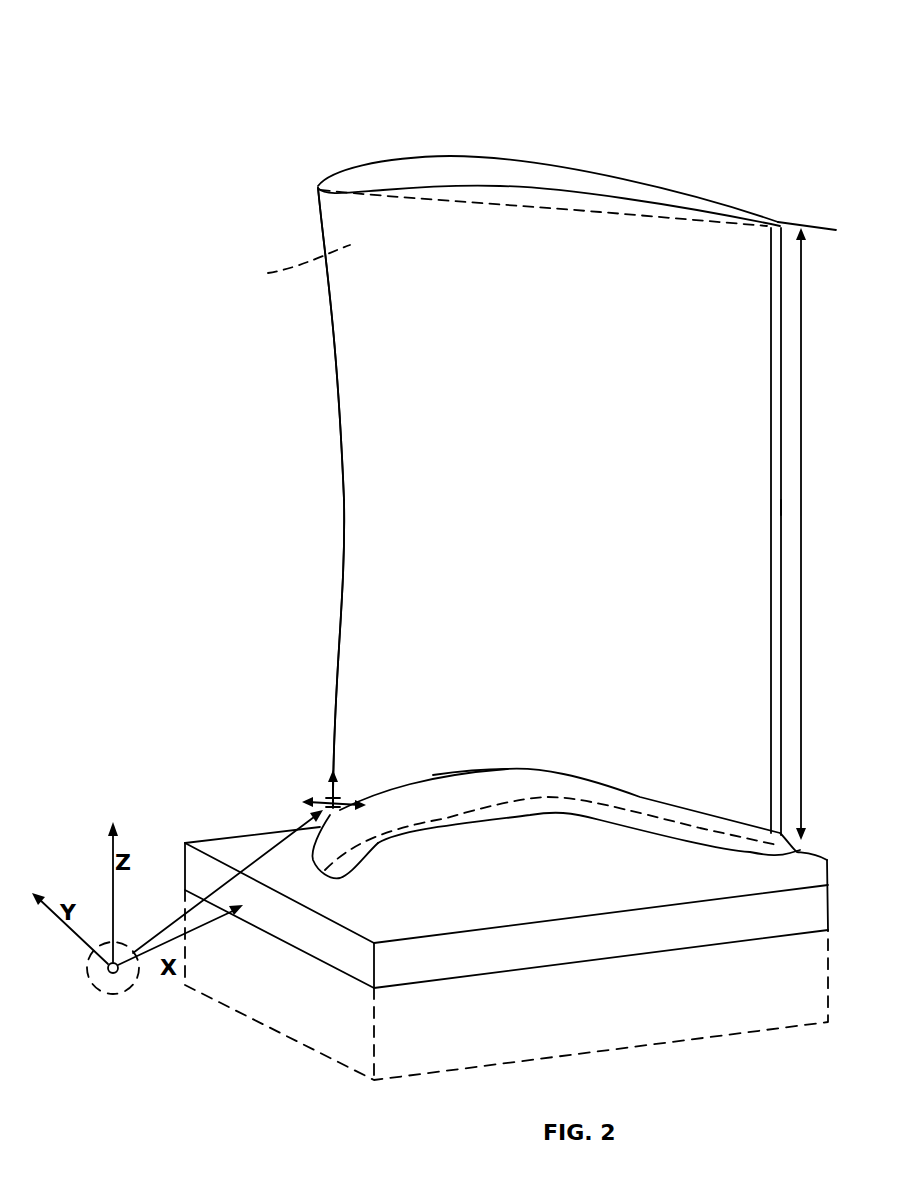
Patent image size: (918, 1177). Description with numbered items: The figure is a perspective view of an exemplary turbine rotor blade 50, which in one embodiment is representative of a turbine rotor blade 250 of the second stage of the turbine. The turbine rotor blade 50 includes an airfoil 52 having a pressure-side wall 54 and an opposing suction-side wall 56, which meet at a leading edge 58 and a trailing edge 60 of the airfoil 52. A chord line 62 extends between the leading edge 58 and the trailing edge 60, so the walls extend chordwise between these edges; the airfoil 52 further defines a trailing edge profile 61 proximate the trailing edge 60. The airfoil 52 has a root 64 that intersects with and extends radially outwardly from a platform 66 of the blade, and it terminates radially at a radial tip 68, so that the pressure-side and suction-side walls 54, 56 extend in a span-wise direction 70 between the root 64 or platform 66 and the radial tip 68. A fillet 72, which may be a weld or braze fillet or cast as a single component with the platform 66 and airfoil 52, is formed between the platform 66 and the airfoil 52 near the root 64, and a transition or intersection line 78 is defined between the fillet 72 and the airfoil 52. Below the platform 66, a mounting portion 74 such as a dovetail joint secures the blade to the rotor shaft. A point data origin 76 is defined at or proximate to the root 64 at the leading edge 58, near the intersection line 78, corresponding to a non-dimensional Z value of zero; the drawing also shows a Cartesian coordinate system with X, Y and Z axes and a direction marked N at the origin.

The turbine rotor blade 50 is at (720, 92).
The turbine rotor blade of the second stage 250 is at (763, 142).
The airfoil 52 is at (561, 514).
The pressure-side wall 54 is at (377, 480).
The suction-side wall 56 is at (296, 265).
The leading edge 58 is at (337, 375).
The trailing edge 60 is at (781, 307).
The trailing edge profile 61 is at (781, 507).
The chord line 62 is at (523, 207).
The root 64 is at (577, 800).
The platform 66 is at (543, 879).
The radial tip 68 is at (590, 160).
The span-wise direction 70 is at (801, 580).
The fillet 72 is at (433, 795).
The mounting portion 74 is at (569, 1016).
The point data origin 76 is at (338, 813).
The transition or intersection line 78 is at (482, 770).
The normal direction N is at (323, 800).